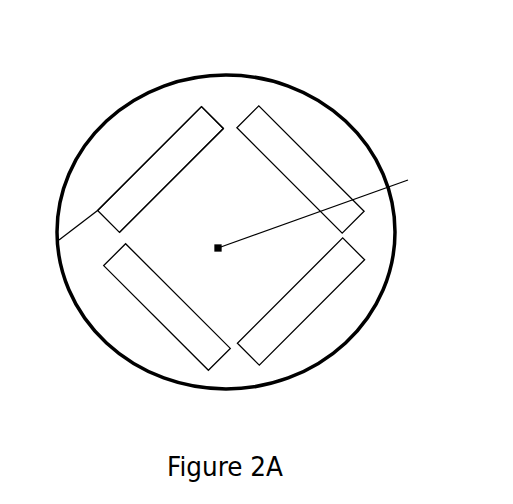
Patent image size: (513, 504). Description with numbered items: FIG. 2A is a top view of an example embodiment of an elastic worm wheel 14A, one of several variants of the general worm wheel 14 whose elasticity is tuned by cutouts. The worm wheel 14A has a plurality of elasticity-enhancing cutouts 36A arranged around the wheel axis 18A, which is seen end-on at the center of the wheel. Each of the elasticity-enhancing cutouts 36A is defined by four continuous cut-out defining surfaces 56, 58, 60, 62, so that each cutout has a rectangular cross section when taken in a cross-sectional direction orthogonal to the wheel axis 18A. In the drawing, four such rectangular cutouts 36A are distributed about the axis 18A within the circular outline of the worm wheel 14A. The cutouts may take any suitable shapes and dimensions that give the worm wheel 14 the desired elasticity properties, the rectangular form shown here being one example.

The worm wheel 14A is at (99, 100).
The elasticity-enhancing cutouts 36A is at (197, 129).
The cut-out defining surface 56 is at (223, 128).
The cut-out defining surface 58 is at (164, 185).
The cut-out defining surface 60 is at (59, 240).
The cut-out defining surface 62 is at (158, 147).
The wheel axis 18A is at (408, 180).
The worm wheel 14 is at (505, 283).